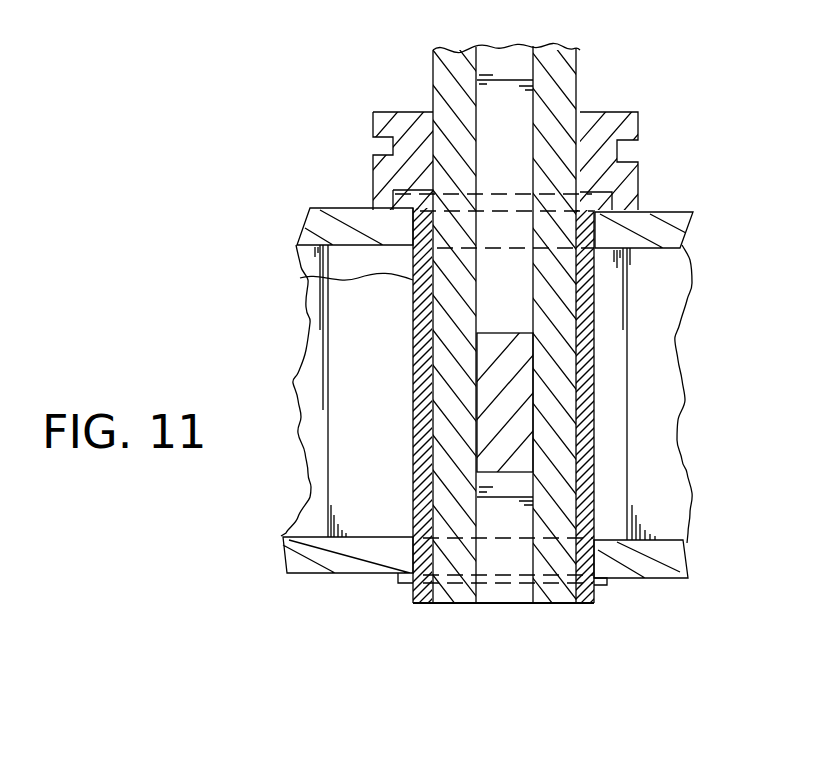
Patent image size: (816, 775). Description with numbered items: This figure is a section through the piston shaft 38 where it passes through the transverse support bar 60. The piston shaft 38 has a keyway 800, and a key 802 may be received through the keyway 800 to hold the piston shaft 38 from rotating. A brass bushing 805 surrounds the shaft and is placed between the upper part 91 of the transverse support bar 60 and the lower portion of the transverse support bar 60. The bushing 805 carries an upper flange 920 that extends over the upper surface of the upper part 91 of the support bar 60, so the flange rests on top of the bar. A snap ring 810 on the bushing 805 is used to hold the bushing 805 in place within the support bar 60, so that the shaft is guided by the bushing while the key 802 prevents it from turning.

The piston shaft 38 is at (573, 80).
The upper flange 920 is at (408, 190).
The upper part of the transverse support bar 91 is at (338, 206).
The bushing 805 is at (325, 280).
The transverse support bar 60 is at (388, 340).
The keyway 800 is at (522, 280).
The key 802 is at (608, 378).
The snap ring 810 is at (600, 583).